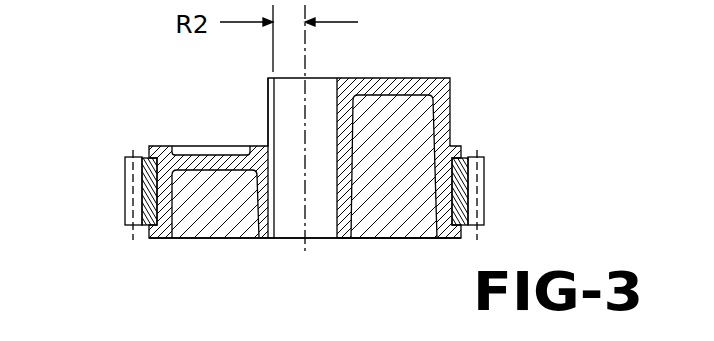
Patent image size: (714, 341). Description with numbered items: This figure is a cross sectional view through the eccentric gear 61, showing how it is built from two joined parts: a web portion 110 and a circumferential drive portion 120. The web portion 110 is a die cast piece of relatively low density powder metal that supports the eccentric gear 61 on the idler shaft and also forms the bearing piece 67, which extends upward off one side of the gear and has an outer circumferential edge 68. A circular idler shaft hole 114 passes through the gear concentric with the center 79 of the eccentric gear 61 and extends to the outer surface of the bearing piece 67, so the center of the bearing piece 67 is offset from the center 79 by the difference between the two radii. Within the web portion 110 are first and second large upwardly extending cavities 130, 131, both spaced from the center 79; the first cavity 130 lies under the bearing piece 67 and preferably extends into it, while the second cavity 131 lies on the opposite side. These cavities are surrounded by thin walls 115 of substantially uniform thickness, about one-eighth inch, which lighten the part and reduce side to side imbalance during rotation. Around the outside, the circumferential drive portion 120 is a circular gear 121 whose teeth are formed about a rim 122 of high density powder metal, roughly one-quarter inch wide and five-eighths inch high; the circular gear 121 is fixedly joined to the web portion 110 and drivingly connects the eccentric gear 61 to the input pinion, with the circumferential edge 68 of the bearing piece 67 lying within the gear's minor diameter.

The eccentric gear 61 is at (127, 288).
The bearing piece 67 is at (446, 122).
The circumferential edge 68 is at (270, 103).
The center of the eccentric gear 79 is at (305, 254).
The web portion 110 is at (406, 86).
The idler shaft hole 114 is at (317, 88).
The thin walls 115 is at (263, 233).
The circumferential drive portion 120 is at (457, 162).
The circular gear 121 is at (478, 199).
The rim 122 is at (146, 159).
The first cavity 130 is at (425, 221).
The second cavity 131 is at (197, 222).